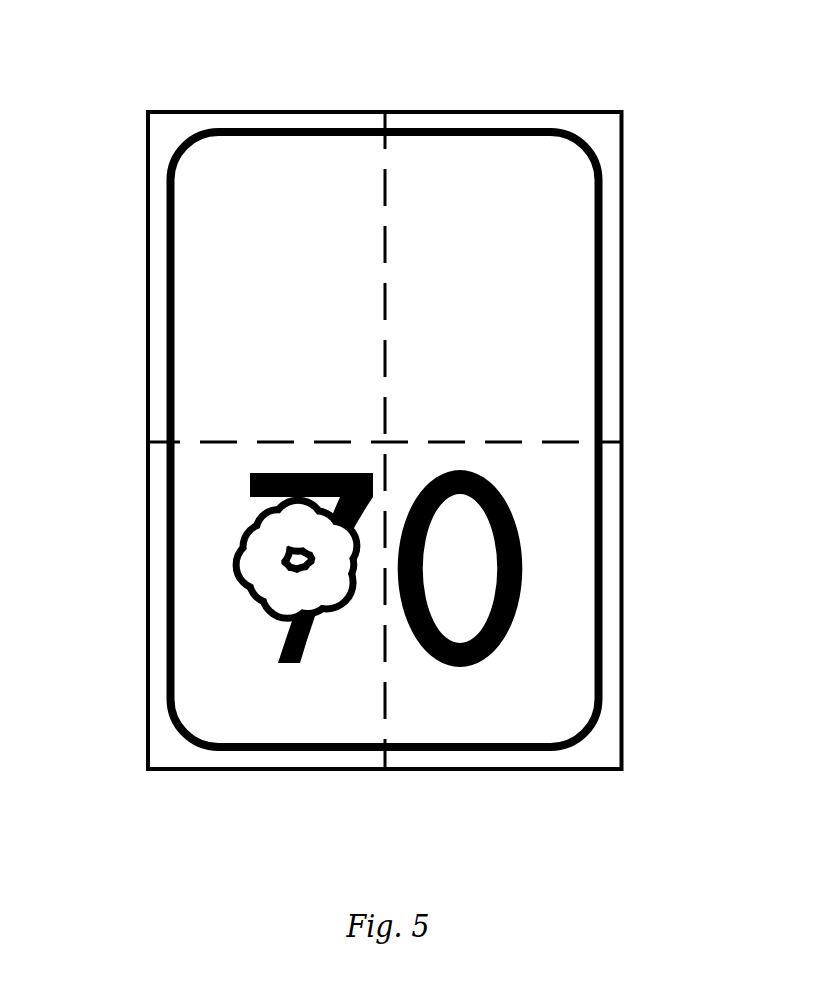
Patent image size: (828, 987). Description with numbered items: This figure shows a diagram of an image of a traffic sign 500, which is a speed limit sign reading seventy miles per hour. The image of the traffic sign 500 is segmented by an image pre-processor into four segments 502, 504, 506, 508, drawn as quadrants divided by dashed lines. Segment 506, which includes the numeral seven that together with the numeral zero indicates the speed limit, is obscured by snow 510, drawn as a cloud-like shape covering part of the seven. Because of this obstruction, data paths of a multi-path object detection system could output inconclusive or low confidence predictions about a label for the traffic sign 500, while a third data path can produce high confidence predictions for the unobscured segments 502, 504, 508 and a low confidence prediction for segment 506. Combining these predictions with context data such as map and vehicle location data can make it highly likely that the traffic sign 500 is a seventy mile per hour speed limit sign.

The traffic sign 500 is at (267, 75).
The segment 502 is at (147, 225).
The segment 504 is at (622, 205).
The segment 506 is at (147, 535).
The segment 508 is at (622, 512).
The snow 510 is at (241, 560).